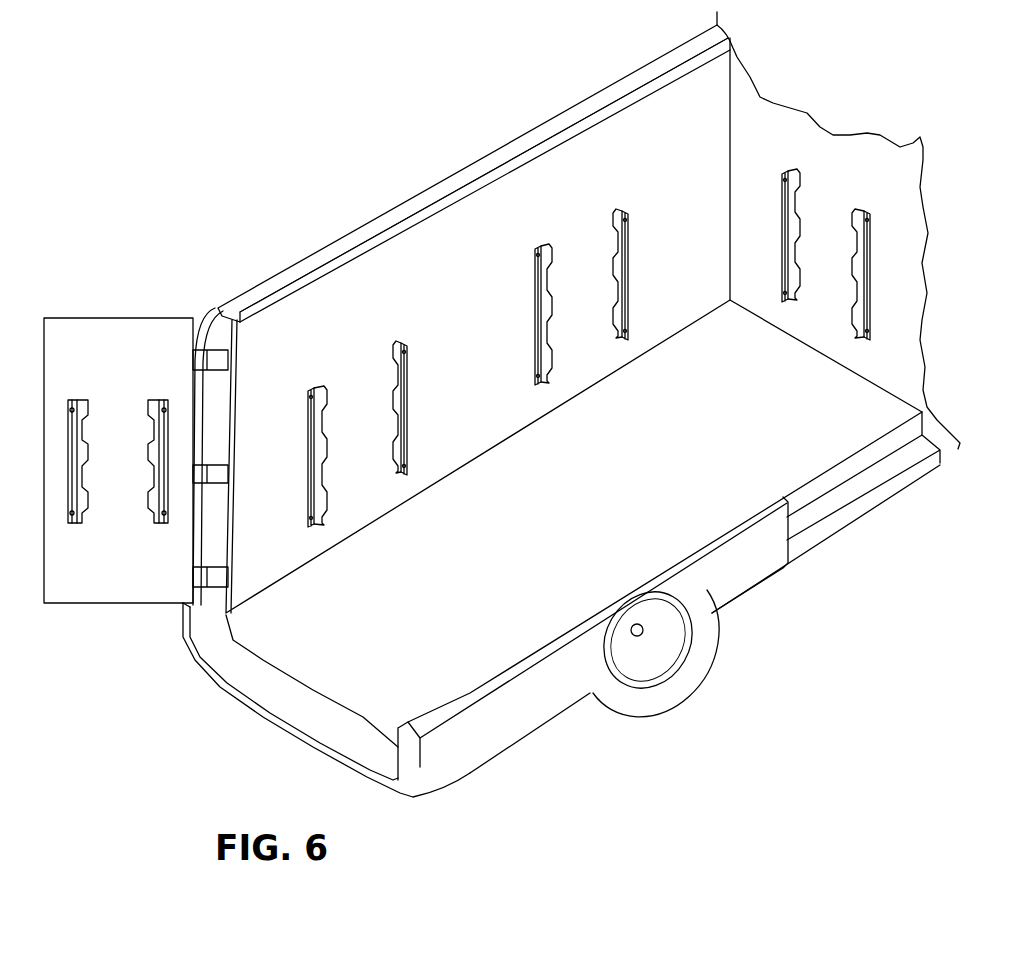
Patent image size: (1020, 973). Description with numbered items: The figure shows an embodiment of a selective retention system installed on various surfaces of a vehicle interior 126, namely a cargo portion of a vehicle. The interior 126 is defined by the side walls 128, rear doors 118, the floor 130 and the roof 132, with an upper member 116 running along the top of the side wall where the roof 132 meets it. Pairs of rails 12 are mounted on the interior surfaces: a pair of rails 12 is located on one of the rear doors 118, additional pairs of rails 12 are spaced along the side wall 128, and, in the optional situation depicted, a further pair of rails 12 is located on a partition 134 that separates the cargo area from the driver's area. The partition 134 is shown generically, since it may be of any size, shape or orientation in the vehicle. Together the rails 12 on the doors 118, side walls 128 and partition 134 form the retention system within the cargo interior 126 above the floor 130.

The rails 12 is at (88, 515).
The top rail 116 is at (463, 170).
The rear doors 118 is at (112, 328).
The vehicle interior 126 is at (586, 152).
The side walls 128 is at (474, 262).
The floor 130 is at (542, 565).
The roof 132 is at (295, 292).
The partition 134 is at (857, 171).